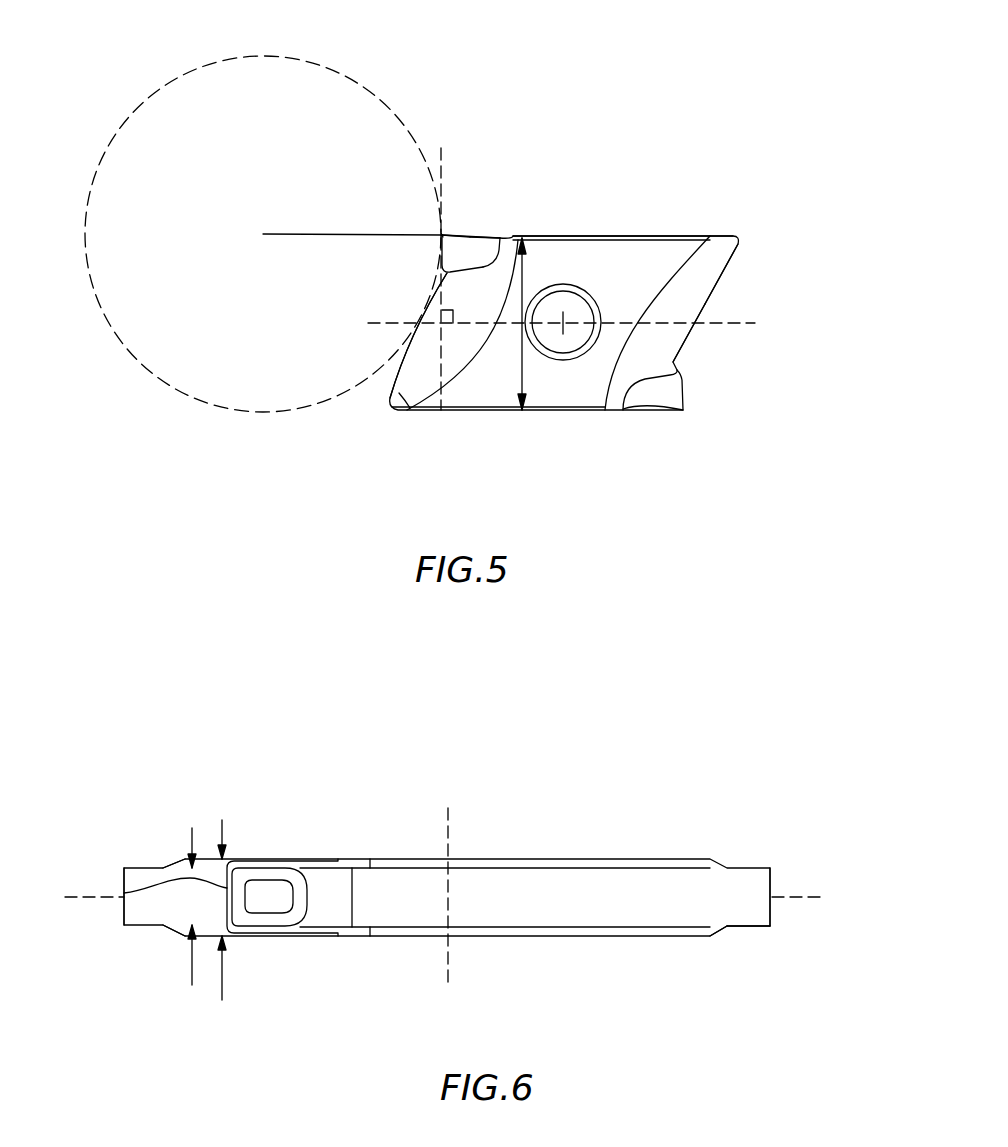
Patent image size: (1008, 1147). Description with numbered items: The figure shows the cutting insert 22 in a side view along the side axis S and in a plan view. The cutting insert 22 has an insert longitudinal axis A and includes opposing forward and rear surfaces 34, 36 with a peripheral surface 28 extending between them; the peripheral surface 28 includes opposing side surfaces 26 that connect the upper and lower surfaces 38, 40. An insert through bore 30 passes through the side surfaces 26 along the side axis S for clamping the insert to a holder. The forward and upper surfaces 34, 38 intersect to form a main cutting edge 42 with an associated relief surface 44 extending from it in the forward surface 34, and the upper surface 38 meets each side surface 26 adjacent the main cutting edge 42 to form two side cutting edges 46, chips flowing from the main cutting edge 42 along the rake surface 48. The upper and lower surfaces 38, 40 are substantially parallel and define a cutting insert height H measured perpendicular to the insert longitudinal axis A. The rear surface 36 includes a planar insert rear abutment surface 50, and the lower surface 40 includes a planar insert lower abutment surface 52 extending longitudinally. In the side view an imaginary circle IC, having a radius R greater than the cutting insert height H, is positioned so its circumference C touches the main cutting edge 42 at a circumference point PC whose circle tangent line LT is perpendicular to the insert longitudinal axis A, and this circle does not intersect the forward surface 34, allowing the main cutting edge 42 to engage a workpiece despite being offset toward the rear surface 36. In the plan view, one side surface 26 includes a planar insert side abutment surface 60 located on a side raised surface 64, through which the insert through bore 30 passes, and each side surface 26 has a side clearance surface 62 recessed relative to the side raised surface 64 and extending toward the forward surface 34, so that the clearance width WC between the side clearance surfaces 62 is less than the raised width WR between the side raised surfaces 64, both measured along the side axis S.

In FIG. 5, the cutting insert 22 is at (762, 215).
In FIG. 6, the cutting insert 22 is at (745, 805).
In FIG. 5, the side surfaces 26 is at (624, 270).
In FIG. 6, the side surfaces 26 is at (590, 852).
In FIG. 5, the peripheral surface 28 is at (700, 230).
In FIG. 6, the peripheral surface 28 is at (702, 913).
In FIG. 5, the insert through bore 30 is at (560, 284).
In FIG. 5, the forward surface 34 is at (393, 377).
In FIG. 6, the forward surface 34 is at (143, 907).
In FIG. 5, the rear surface 36 is at (730, 272).
In FIG. 6, the rear surface 36 is at (795, 876).
In FIG. 5, the upper surface 38 is at (602, 235).
In FIG. 6, the upper surface 38 is at (640, 890).
In FIG. 5, the lower surface 40 is at (572, 412).
In FIG. 5, the main cutting edge 42 is at (445, 233).
In FIG. 6, the main cutting edge 42 is at (124, 893).
In FIG. 5, the relief surface 44 is at (440, 254).
In FIG. 5, the side cutting edges 46 is at (468, 237).
In FIG. 6, the side cutting edges 46 is at (268, 862).
In FIG. 5, the rake surface 48 is at (495, 229).
In FIG. 6, the rake surface 48 is at (238, 897).
In FIG. 5, the insert rear abutment surface 50 is at (715, 294).
In FIG. 6, the insert rear abutment surface 50 is at (797, 932).
In FIG. 5, the insert lower abutment surface 52 is at (534, 412).
In FIG. 6, the insert side abutment surface 60 is at (485, 859).
In FIG. 5, the side clearance surface 62 is at (393, 408).
In FIG. 6, the side clearance surface 62 is at (162, 866).
In FIG. 5, the side raised surface 64 is at (493, 388).
In FIG. 6, the side raised surface 64 is at (378, 859).
In FIG. 5, the imaginary circle IC is at (353, 80).
In FIG. 5, the circumference C is at (400, 118).
In FIG. 5, the circle tangent line LT is at (444, 268).
In FIG. 5, the radius R is at (331, 234).
In FIG. 5, the circumference point PC is at (442, 234).
In FIG. 5, the side axis S is at (562, 322).
In FIG. 6, the side axis S is at (447, 912).
In FIG. 5, the cutting insert height H is at (523, 365).
In FIG. 5, the insert longitudinal axis A is at (557, 323).
In FIG. 6, the insert longitudinal axis A is at (444, 898).
In FIG. 6, the clearance width WC is at (194, 885).
In FIG. 6, the raised width WR is at (225, 887).